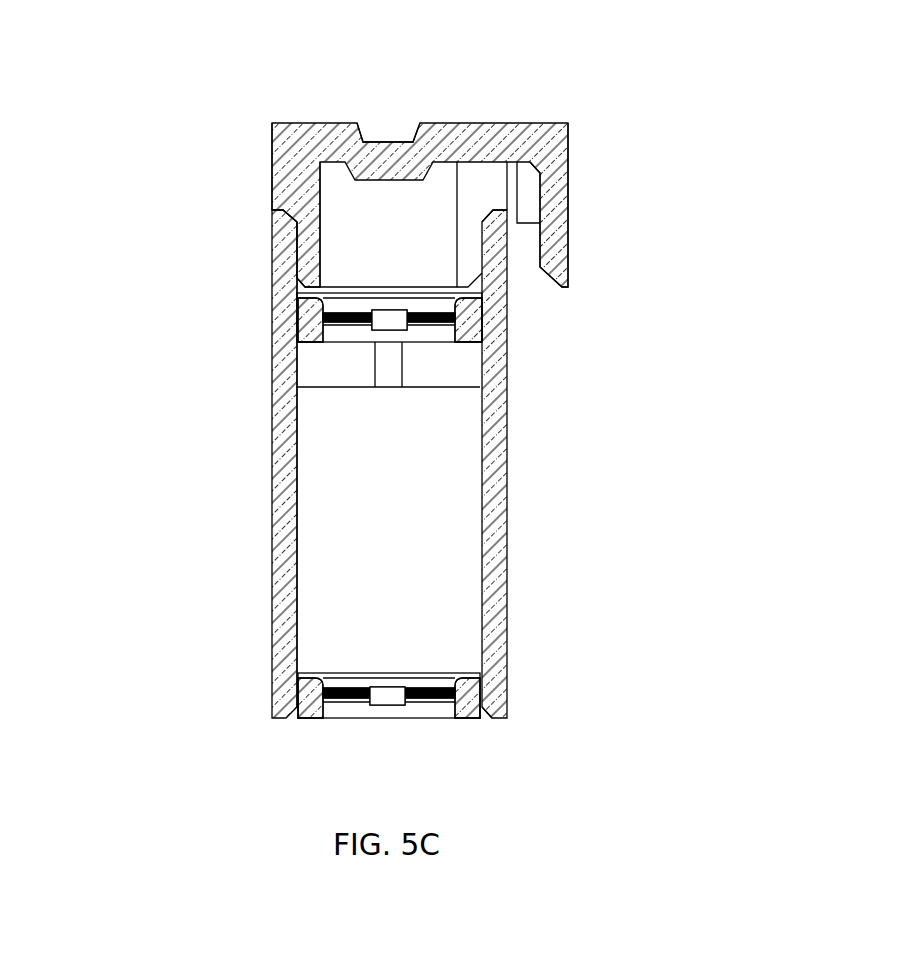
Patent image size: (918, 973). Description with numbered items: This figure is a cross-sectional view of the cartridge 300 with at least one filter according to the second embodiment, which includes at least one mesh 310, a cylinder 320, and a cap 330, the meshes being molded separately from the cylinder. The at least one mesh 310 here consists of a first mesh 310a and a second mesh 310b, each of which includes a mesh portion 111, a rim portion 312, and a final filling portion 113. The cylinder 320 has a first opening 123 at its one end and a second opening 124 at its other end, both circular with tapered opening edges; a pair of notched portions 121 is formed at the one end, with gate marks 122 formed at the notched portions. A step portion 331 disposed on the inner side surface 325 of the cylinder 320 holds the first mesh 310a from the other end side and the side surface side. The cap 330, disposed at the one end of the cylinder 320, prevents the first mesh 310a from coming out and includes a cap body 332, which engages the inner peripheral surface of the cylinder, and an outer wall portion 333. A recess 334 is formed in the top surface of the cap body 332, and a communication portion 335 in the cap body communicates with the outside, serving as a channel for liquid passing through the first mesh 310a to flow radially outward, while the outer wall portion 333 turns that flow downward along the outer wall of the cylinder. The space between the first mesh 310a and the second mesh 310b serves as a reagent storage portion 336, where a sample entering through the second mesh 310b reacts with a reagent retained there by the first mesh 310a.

The cartridge with at least one filter 300 is at (768, 115).
The cap 330 is at (573, 141).
The step portion 331 is at (285, 343).
The cap body 332 is at (272, 152).
The outer wall portion 333 is at (560, 240).
The recess 334 is at (360, 123).
The communication portion 335 is at (492, 208).
The reagent storage portion 336 is at (322, 405).
The cylinder 320 is at (260, 567).
The notched portion 121 is at (272, 211).
The gate mark 122 is at (285, 217).
The first opening 123 is at (500, 174).
The second opening 124 is at (495, 718).
The inner side surface 325 is at (300, 482).
The mesh 310 is at (651, 595).
The first mesh 310a is at (496, 323).
The second mesh 310b is at (496, 692).
The rim portion 312 is at (300, 336).
The mesh portion 111 is at (335, 312).
The final filling portion 113 is at (394, 310).